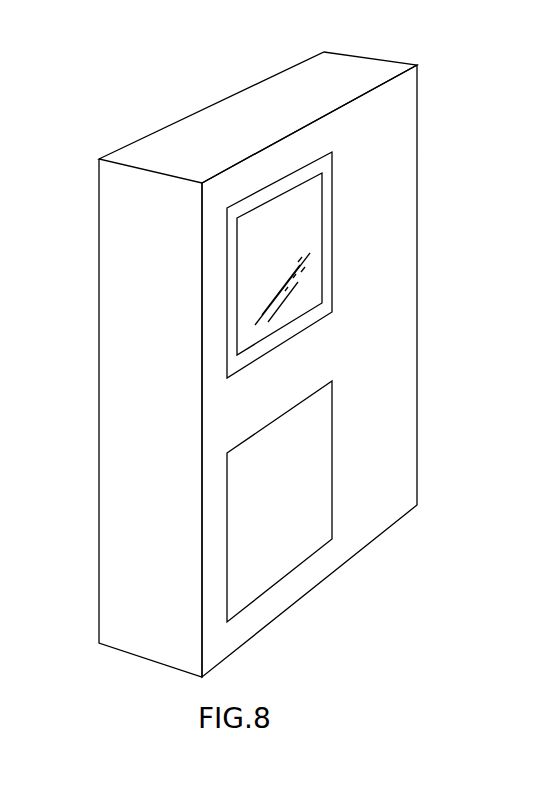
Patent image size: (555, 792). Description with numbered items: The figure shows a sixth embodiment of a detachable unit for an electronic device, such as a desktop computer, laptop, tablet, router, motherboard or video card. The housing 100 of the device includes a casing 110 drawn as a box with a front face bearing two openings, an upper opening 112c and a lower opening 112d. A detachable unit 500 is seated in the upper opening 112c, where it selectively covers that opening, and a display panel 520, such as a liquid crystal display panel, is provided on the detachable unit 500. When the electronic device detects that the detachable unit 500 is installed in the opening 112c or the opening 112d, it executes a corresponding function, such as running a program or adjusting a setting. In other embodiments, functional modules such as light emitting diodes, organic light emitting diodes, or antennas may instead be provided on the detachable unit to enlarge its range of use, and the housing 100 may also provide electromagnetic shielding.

The housing 100 is at (197, 68).
The casing 110 is at (365, 68).
The opening 112c is at (234, 277).
The detachable unit 500 is at (240, 362).
The display panel 520 is at (303, 243).
The opening 112d is at (275, 530).